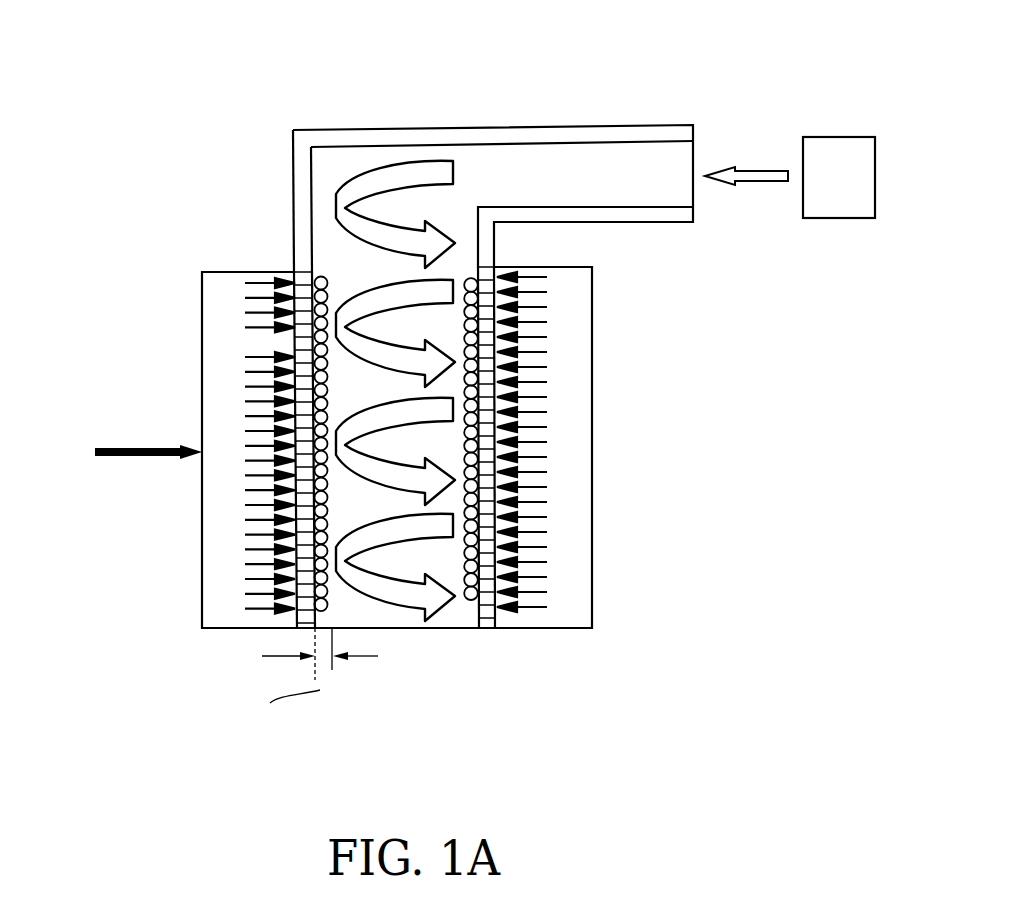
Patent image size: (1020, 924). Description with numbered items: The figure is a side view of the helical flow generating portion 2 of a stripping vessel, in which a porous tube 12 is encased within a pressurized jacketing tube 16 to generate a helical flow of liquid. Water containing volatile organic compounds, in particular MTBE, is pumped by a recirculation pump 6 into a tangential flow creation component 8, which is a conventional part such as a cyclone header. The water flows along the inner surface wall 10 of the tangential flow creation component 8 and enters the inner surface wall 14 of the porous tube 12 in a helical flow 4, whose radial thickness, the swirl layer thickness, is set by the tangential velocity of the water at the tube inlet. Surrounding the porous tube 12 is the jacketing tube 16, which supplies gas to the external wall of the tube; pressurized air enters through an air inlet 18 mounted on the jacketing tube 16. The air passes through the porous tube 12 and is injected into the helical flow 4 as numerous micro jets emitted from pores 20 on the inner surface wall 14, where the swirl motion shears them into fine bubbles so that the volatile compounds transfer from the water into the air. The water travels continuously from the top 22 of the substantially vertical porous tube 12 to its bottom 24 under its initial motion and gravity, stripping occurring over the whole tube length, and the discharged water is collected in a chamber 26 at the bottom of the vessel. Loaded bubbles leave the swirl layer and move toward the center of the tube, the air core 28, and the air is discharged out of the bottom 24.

The helical flow generating portion 2 is at (130, 170).
The helical flow 4 is at (375, 168).
The recirculation pump 6 is at (845, 191).
The tangential flow creation component 8 is at (495, 127).
The inner surface wall 10 is at (293, 175).
The porous tube 12 is at (493, 632).
The inner surface wall 14 is at (477, 618).
The jacketing tube 16 is at (203, 540).
The air inlet 18 is at (122, 450).
The pores 20 is at (497, 403).
The top 22 is at (322, 267).
The bottom 24 is at (403, 635).
The chamber 26 is at (414, 755).
The air core 28 is at (537, 508).